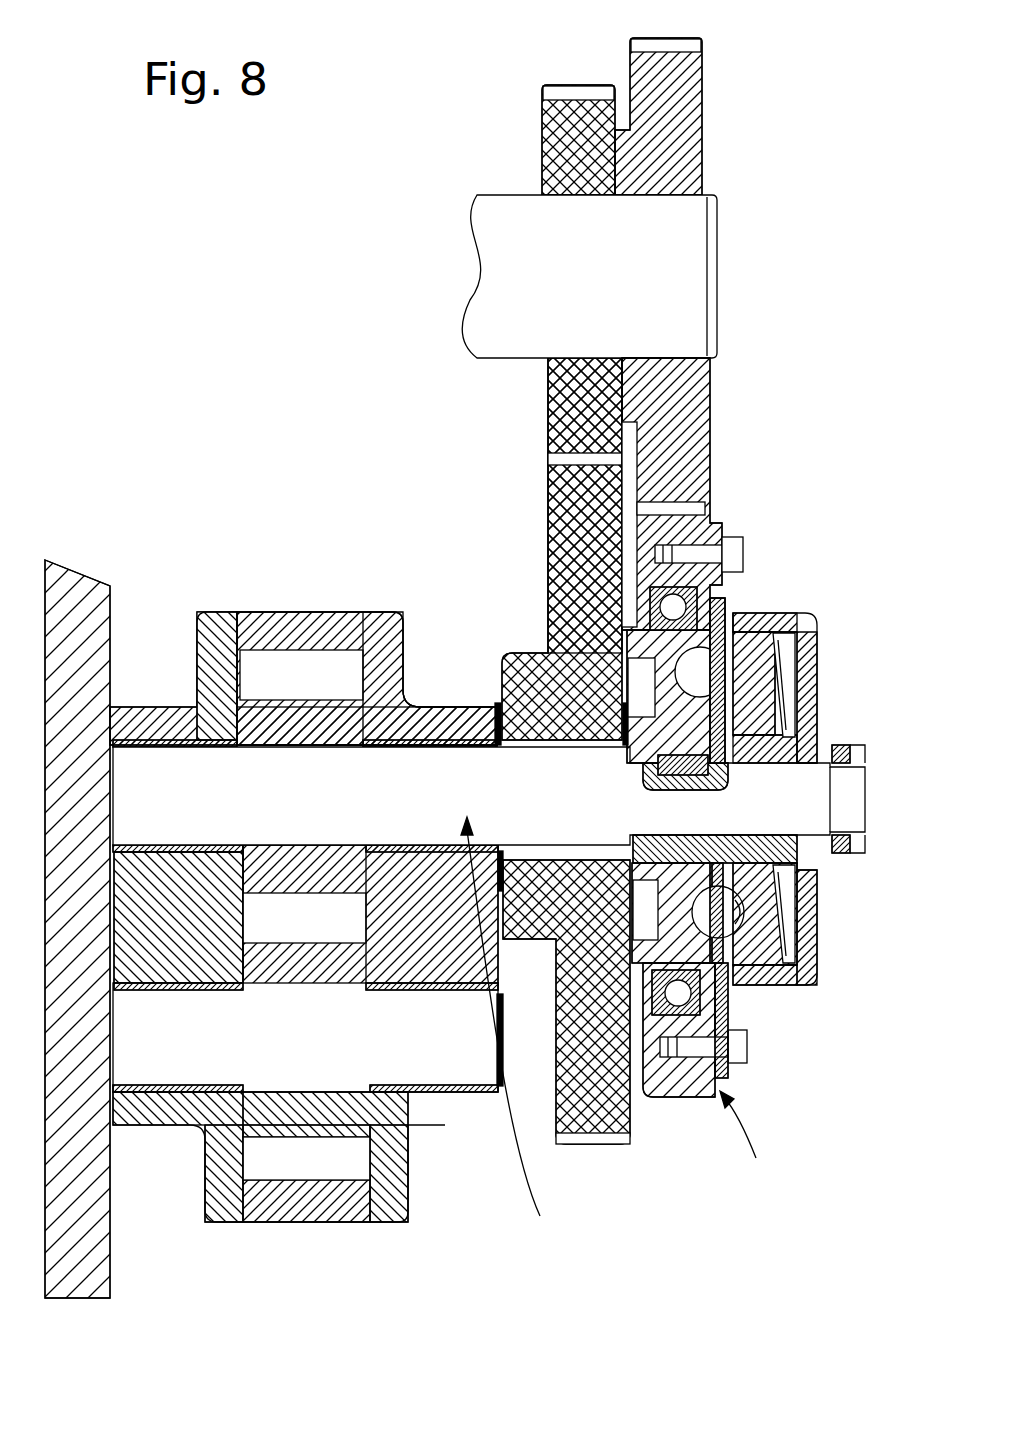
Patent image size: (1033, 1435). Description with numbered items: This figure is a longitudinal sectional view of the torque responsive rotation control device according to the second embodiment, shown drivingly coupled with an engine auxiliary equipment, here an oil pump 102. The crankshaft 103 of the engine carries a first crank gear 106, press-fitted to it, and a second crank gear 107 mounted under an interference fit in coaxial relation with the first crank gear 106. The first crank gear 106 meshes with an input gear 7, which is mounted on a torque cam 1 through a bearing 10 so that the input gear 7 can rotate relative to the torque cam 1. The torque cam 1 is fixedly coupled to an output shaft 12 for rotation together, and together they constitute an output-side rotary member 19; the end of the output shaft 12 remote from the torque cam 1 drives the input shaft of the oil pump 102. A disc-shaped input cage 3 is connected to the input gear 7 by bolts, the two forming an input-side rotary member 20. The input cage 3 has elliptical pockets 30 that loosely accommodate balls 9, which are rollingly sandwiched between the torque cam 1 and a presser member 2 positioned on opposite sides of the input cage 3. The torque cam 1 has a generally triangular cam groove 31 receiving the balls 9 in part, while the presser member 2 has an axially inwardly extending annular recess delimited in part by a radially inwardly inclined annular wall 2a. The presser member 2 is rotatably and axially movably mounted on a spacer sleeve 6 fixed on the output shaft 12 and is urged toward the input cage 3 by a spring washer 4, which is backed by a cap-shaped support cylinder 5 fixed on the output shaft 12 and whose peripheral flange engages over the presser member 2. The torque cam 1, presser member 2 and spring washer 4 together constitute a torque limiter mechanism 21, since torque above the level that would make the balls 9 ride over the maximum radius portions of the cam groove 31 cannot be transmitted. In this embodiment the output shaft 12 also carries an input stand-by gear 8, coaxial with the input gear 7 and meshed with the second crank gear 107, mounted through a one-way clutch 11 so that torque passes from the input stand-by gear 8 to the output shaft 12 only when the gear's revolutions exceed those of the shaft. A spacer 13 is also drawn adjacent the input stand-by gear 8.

The torque cam 1 is at (748, 1043).
The presser member 2 is at (765, 960).
The radially inwardly inclined annular wall 2a is at (814, 622).
The input cage 3 is at (724, 600).
The spring washer 4 is at (816, 922).
The support cylinder 5 is at (812, 660).
The spacer sleeve 6 is at (818, 855).
The input gear 7 is at (672, 523).
The input stand-by gear 8 is at (580, 560).
The balls 9 is at (720, 915).
The bearing 10 is at (743, 570).
The one-way clutch 11 is at (556, 851).
The output shaft 12 is at (395, 803).
The spacer 13 is at (622, 705).
The output-side rotary member 19 is at (513, 1038).
The input-side rotary member 20 is at (754, 1138).
The torque limiter mechanism 21 is at (760, 700).
The pockets 30 is at (725, 950).
The cam groove 31 is at (735, 670).
The oil pump 102 is at (272, 918).
The crankshaft 103 is at (530, 230).
The first crank gear 106 is at (700, 70).
The second crank gear 107 is at (580, 105).